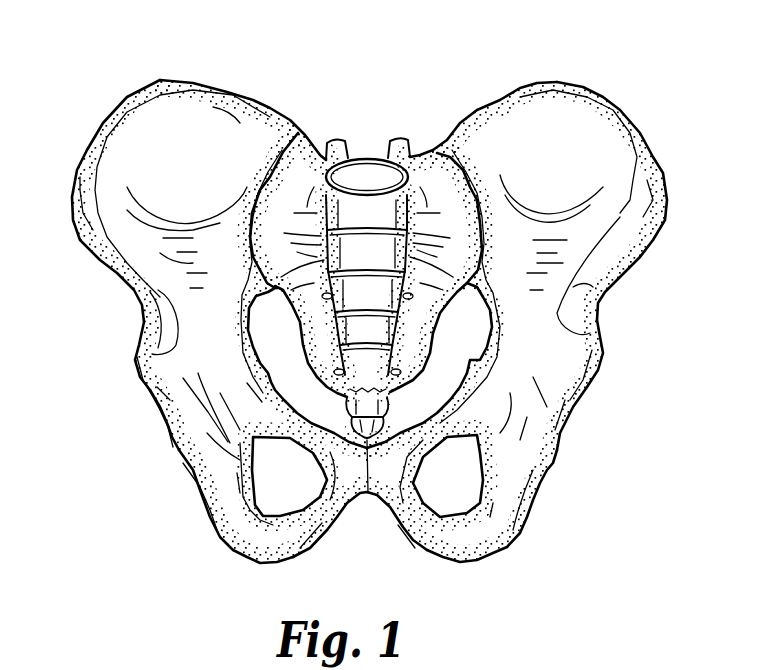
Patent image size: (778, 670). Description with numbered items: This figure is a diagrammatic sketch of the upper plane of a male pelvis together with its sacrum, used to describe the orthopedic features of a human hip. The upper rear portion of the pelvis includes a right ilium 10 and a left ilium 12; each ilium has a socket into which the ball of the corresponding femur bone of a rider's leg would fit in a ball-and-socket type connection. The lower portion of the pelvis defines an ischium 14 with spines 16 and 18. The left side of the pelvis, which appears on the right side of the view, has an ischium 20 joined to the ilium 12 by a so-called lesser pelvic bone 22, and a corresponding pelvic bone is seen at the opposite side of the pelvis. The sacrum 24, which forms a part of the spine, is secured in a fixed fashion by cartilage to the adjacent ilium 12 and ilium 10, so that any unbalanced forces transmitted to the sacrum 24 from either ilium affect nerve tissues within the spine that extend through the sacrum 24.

The right ilium 10 is at (163, 80).
The left ilium 12 is at (585, 87).
The ischium 14 is at (262, 562).
The spine 16 is at (287, 442).
The spine 18 is at (337, 522).
The ischium 20 is at (493, 557).
The lesser pelvic bone 22 is at (515, 370).
The sacrum 24 is at (357, 205).